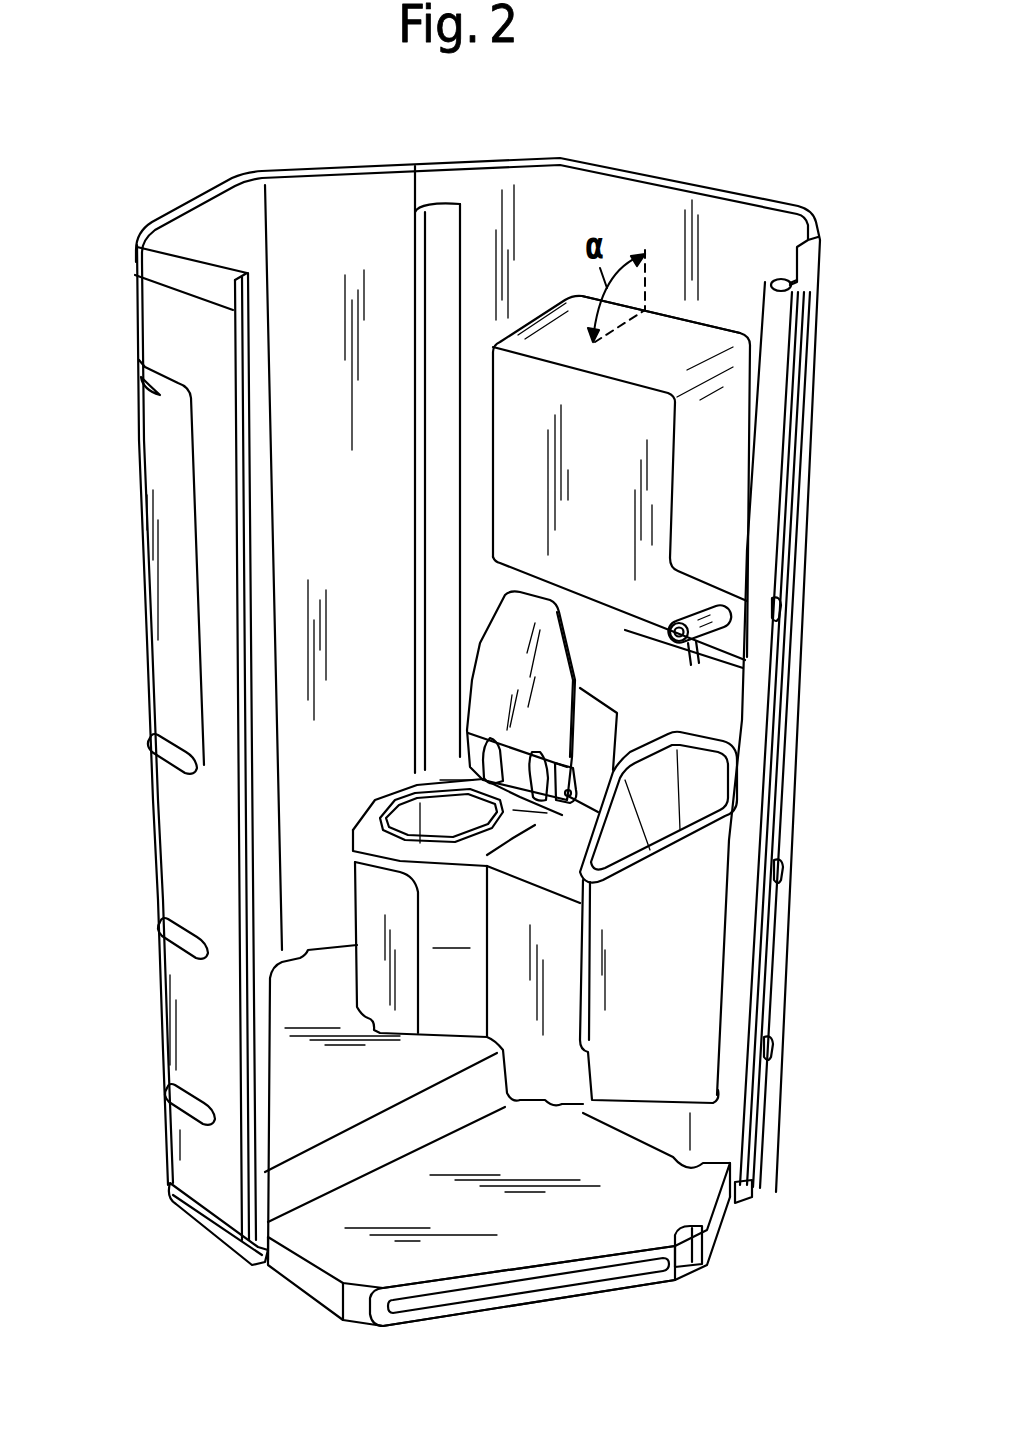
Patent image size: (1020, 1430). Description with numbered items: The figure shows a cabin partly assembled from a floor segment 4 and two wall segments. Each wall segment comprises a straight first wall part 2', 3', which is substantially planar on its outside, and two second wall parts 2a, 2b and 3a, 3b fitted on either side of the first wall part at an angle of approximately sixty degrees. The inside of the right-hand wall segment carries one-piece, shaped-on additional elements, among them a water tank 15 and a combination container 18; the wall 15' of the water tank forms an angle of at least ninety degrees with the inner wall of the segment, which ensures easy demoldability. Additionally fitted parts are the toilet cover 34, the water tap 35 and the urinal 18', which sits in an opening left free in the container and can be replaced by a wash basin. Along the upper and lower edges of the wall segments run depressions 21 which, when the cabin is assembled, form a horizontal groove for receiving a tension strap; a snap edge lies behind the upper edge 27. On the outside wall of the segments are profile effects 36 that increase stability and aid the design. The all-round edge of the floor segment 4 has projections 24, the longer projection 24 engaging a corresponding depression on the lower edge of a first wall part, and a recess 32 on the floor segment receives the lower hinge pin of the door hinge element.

The first wall part 2' is at (191, 649).
The second wall part 2a is at (320, 168).
The second wall part 2b is at (170, 343).
The first wall part 3' is at (763, 658).
The second wall part 3a is at (818, 230).
The second wall part 3b is at (498, 160).
The floor segment 4 is at (321, 1308).
The water tank 15 is at (621, 482).
The wall of the water tank 15' is at (662, 310).
The combination container 18 is at (705, 919).
The urinal 18' is at (714, 795).
The depression 21 is at (182, 280).
The projection 24 is at (560, 1290).
The upper edge 27 is at (133, 241).
The recess 32 is at (705, 1240).
The toilet cover 34 is at (505, 660).
The water tap 35 is at (722, 618).
The profile effects 36 is at (160, 748).